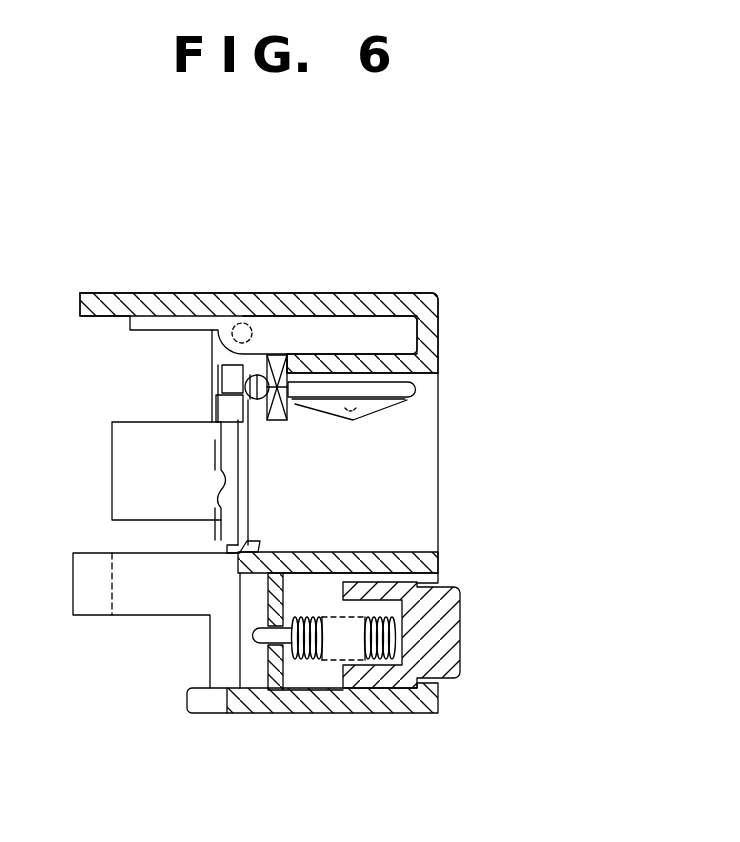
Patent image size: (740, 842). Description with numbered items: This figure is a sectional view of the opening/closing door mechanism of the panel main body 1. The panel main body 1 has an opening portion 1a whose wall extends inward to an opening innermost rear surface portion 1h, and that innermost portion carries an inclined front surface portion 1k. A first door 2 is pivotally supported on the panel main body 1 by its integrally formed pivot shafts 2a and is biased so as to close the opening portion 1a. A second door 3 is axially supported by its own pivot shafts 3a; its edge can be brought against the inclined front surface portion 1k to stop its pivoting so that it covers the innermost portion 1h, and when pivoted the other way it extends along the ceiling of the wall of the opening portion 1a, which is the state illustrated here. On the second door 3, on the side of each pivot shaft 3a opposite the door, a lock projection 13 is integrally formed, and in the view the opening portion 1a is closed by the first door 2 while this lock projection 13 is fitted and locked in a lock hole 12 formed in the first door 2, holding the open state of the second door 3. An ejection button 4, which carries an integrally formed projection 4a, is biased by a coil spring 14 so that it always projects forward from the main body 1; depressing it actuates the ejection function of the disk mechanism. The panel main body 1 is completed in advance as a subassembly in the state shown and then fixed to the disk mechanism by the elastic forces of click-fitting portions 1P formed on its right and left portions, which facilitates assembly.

The panel main body 1 is at (430, 293).
The click-fitting portion 1P is at (160, 600).
The opening portion 1a is at (393, 498).
The opening innermost rear surface portion 1h is at (228, 552).
The inclined front surface portion 1k is at (256, 548).
The first door 2 is at (232, 486).
The pivot shaft 2a is at (253, 326).
The second door 3 is at (392, 417).
The pivot shaft 3a is at (272, 380).
The ejection button 4 is at (440, 632).
The projection 4a is at (259, 648).
The lock hole 12 is at (228, 413).
The lock projection 13 is at (232, 385).
The coil spring 14 is at (365, 665).